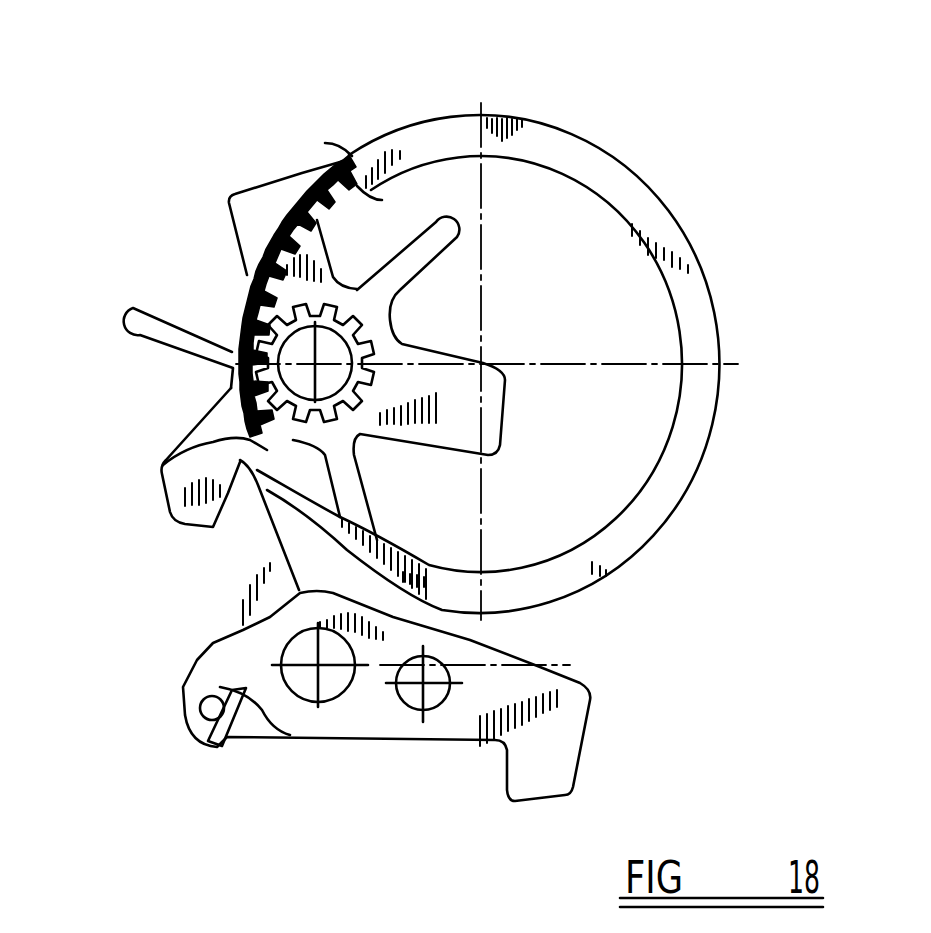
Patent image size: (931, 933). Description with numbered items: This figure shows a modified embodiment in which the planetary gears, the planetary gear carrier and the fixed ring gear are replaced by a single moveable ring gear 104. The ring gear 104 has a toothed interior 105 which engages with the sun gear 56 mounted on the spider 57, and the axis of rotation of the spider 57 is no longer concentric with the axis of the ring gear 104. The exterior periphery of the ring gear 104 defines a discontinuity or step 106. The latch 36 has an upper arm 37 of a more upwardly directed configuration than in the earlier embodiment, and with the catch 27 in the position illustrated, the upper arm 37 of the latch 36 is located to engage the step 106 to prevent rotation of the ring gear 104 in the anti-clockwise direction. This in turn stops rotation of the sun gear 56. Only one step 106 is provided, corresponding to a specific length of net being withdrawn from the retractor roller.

The catch 27 is at (372, 710).
The latch 36 is at (208, 606).
The upper arm 37 is at (253, 540).
The sun gear 56 is at (340, 312).
The spider 57 is at (163, 320).
The moveable ring gear 104 is at (563, 158).
The toothed interior 105 is at (345, 185).
The step 106 is at (167, 490).